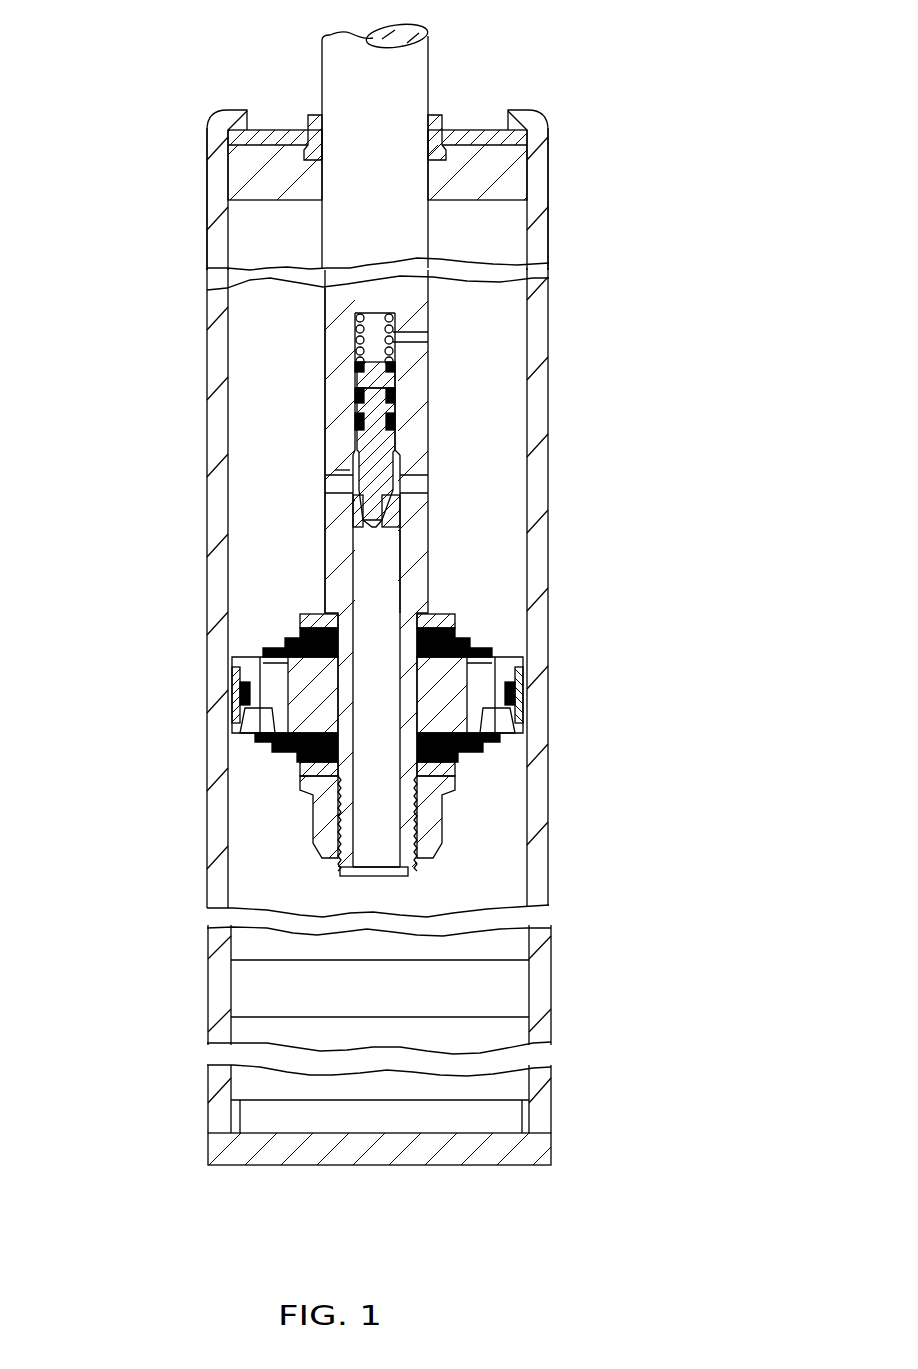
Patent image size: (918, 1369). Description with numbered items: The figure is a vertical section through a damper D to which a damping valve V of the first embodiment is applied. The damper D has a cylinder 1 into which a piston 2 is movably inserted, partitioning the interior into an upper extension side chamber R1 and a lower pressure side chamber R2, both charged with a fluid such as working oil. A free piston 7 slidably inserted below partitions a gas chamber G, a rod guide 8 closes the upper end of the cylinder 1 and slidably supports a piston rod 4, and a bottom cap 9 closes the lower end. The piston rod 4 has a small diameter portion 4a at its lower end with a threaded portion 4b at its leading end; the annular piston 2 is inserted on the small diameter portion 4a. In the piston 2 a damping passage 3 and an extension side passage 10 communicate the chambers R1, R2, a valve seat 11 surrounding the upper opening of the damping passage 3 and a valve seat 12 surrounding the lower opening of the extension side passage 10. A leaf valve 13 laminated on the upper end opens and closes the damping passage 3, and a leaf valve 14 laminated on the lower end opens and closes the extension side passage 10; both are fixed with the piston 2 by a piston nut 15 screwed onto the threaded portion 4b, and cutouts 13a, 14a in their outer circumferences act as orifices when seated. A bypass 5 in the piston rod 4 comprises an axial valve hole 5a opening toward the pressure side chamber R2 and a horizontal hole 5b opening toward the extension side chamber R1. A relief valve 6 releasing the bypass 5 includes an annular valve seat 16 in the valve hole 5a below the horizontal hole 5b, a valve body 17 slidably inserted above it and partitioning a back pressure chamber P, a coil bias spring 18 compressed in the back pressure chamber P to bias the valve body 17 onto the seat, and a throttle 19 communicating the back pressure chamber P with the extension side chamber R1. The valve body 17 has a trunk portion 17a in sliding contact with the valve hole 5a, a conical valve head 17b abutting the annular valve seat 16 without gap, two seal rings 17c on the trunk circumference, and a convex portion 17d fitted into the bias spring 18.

The damper D is at (201, 103).
The cylinder 1 is at (207, 440).
The piston 2 is at (538, 675).
The damping passage 3 is at (268, 683).
The piston rod 4 is at (433, 74).
The small diameter portion 4a is at (340, 708).
The threaded portion 4b is at (318, 810).
The bypass 5 is at (358, 570).
The valve hole 5a is at (401, 575).
The horizontal hole 5b is at (403, 485).
The relief valve 6 is at (342, 470).
The free piston 7 is at (510, 983).
The rod guide 8 is at (502, 177).
The bottom cap 9 is at (500, 1148).
The extension side passage 10 is at (482, 703).
The valve seat 11 is at (268, 655).
The valve seat 12 is at (498, 733).
The leaf valve 13 is at (278, 622).
The cutout 13a is at (248, 656).
The leaf valve 14 is at (500, 733).
The cutout 14a is at (483, 754).
The piston nut 15 is at (437, 828).
The annular valve seat 16 is at (355, 520).
The valve body 17 is at (409, 430).
The trunk portion 17a is at (396, 400).
The valve head 17b is at (399, 510).
The seal ring 17c is at (353, 422).
The convex portion 17d is at (396, 370).
The bias spring 18 is at (430, 343).
The throttle 19 is at (424, 333).
The back pressure chamber P is at (343, 353).
The damping valve V is at (436, 524).
The extension side chamber R1 is at (248, 307).
The pressure side chamber R2 is at (268, 858).
The gas chamber G is at (493, 1088).